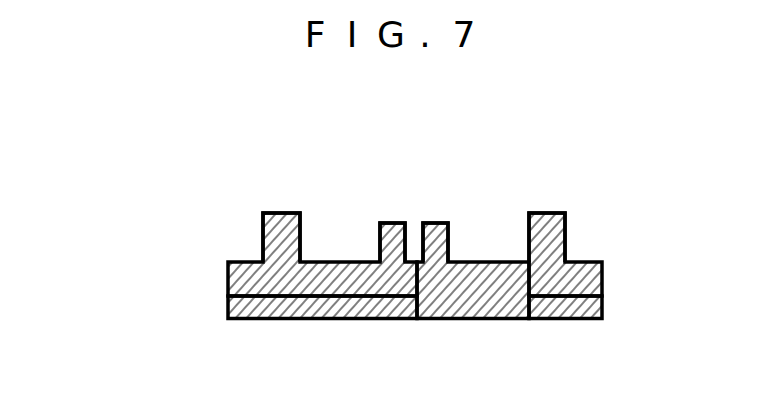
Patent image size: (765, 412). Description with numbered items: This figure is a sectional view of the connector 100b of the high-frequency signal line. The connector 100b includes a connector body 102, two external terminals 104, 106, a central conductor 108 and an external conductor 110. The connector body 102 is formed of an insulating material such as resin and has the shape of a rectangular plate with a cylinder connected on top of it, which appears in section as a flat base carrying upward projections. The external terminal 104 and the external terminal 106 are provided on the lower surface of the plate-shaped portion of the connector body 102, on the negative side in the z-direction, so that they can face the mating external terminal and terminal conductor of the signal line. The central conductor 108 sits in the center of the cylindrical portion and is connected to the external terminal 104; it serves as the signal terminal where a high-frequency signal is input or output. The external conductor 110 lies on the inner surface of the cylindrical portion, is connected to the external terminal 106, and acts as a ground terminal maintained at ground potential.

The connector 100b is at (303, 140).
The connector body 102 is at (602, 274).
The external terminal 104 is at (263, 320).
The external terminal 106 is at (573, 320).
The central conductor 108 is at (407, 227).
The external conductor 110 is at (300, 232).